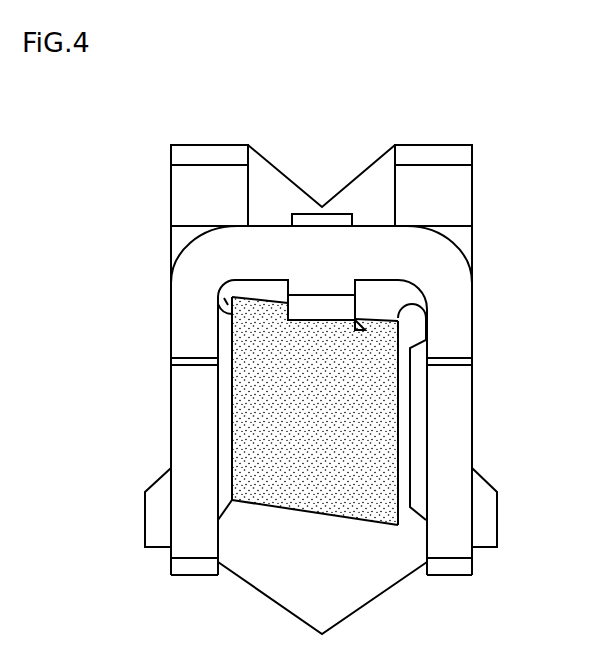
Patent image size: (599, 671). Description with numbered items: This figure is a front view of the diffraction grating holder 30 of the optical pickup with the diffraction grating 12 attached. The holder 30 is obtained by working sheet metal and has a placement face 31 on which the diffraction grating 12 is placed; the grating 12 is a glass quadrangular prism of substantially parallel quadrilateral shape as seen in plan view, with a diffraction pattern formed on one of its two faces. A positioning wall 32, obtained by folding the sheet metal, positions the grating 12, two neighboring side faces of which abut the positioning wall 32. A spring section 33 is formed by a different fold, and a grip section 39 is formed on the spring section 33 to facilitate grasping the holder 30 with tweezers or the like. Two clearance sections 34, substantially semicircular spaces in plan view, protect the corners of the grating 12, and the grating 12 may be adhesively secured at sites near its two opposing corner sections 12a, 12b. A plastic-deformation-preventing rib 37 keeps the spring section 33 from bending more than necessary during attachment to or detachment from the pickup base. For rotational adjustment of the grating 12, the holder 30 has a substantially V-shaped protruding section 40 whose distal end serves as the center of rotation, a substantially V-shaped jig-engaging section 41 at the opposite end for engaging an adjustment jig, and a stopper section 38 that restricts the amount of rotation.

The diffraction grating 12 is at (262, 420).
The corner section 12a is at (231, 295).
The corner section 12b is at (398, 525).
The diffraction grating holder 30 is at (485, 130).
The placement face 31 is at (284, 548).
The positioning wall 32 is at (383, 317).
The spring section 33 is at (462, 300).
The clearance section 34 is at (226, 302).
The plastic-deformation-preventing rib 37 is at (318, 217).
The stopper section 38 is at (158, 500).
The grip section 39 is at (318, 300).
The protruding section 40 is at (352, 630).
The jig-engaging section 41 is at (338, 143).